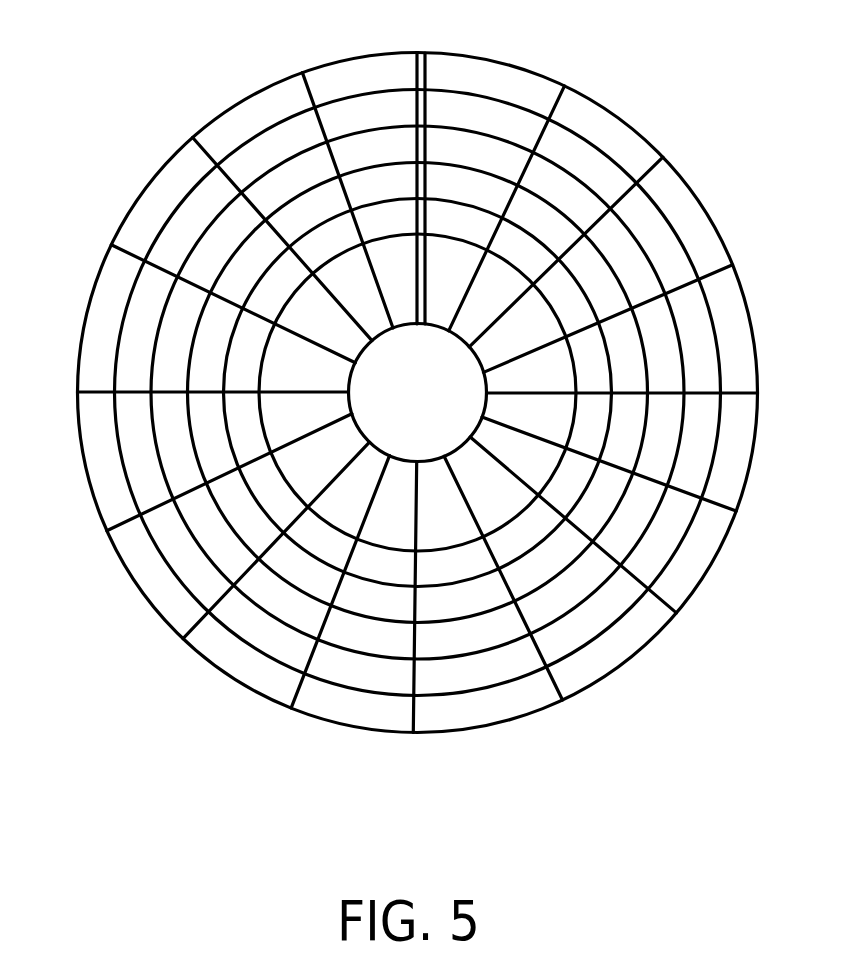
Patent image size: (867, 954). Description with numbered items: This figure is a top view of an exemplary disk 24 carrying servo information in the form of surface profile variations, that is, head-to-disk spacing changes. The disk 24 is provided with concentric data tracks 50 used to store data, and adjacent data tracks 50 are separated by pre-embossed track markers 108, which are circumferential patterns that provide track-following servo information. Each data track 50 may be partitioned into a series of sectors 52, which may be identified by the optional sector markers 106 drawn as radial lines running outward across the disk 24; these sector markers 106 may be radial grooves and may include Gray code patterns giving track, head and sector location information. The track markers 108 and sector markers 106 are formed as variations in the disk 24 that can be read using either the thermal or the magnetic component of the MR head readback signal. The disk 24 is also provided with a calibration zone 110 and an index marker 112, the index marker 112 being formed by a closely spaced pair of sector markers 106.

The disk 24 is at (420, 369).
The data tracks 50 is at (690, 317).
The sectors 52 is at (138, 590).
The sector markers 106 is at (665, 608).
The track markers 108 is at (717, 452).
The calibration zone 110 is at (287, 365).
The index marker 112 is at (416, 72).